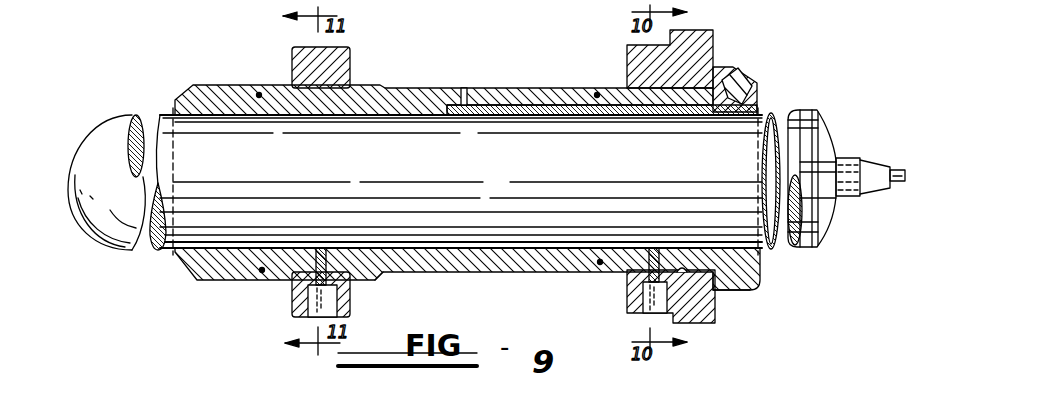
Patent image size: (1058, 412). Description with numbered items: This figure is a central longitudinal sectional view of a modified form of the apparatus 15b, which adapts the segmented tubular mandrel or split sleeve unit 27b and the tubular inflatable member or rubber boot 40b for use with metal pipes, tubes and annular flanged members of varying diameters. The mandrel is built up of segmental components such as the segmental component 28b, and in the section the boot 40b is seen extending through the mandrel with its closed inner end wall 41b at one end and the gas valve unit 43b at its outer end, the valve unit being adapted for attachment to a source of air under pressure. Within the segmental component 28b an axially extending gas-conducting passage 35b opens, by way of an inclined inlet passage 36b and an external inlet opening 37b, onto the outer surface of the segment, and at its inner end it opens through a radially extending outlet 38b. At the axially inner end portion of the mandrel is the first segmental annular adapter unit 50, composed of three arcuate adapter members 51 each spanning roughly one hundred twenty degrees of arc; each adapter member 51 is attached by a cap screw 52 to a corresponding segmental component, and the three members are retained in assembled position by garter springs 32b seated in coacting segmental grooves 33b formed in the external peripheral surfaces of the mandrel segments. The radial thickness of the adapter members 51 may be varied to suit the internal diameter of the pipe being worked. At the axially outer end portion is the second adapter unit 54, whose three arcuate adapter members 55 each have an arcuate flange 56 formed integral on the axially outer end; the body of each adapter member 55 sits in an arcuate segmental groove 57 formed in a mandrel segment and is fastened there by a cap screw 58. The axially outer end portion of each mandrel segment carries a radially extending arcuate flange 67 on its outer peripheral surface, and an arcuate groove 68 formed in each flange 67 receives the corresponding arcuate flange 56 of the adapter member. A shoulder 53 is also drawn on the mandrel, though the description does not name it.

The apparatus 15b is at (805, 109).
The segmented tubular mandrel or split sleeve unit 27b is at (520, 272).
The segmental component 28b is at (420, 108).
The garter spring 32b is at (262, 272).
The segmental groove 33b is at (259, 93).
The gas-conducting passage 35b is at (537, 112).
The inclined inlet passage 36b is at (735, 102).
The external inlet opening 37b is at (740, 78).
The radially extending outlet 38b is at (465, 87).
The tubular inflatable member or rubber boot 40b is at (765, 240).
The closed inner end wall 41b is at (105, 248).
The gas valve unit 43b is at (855, 158).
The first segmental annular adapter unit 50 is at (335, 48).
The arcuate adapter member 51 is at (352, 313).
The cap screw 52 is at (307, 317).
The shoulder 53 is at (358, 276).
The second adapter unit 54 is at (627, 264).
The arcuate adapter member 55 is at (699, 275).
The arcuate flange 56 is at (717, 316).
The arcuate segmental groove 57 is at (684, 272).
The cap screw 58 is at (647, 312).
The radially extending arcuate flange 67 is at (753, 284).
The arcuate groove 68 is at (703, 272).